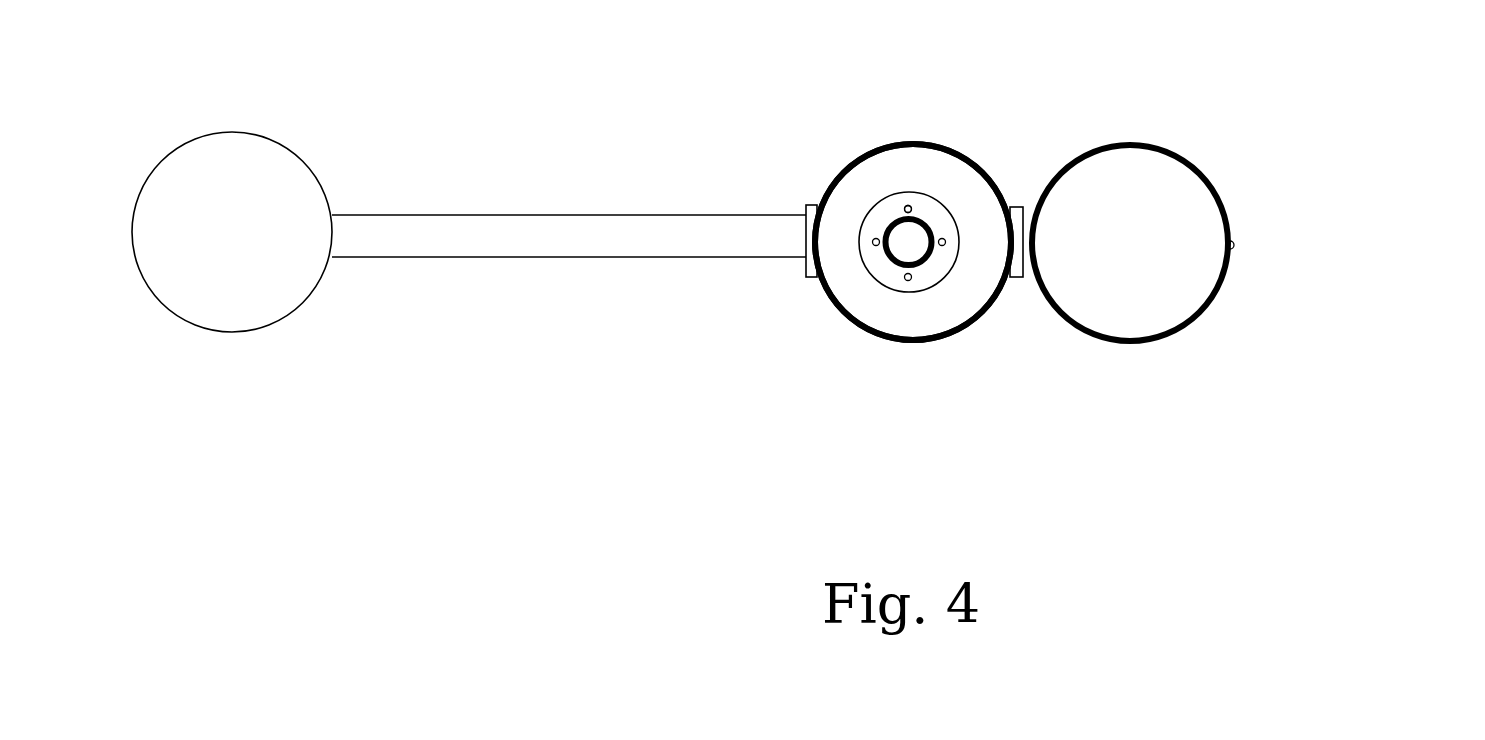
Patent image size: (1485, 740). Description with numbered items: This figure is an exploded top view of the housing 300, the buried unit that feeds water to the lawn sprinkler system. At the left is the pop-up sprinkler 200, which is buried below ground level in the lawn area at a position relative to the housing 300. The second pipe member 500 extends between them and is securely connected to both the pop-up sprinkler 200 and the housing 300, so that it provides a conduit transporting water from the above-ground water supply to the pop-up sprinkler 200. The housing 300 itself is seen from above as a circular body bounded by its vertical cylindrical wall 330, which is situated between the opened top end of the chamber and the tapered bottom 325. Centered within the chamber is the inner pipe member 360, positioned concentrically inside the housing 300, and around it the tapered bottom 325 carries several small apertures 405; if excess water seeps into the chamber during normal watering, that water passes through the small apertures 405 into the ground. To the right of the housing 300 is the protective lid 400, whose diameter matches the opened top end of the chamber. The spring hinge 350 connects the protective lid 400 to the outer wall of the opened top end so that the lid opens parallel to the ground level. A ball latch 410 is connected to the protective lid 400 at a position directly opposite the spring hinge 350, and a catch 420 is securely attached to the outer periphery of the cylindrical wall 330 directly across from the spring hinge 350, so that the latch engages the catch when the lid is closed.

The pop-up sprinkler 200 is at (228, 372).
The second pipe member 500 is at (448, 298).
The housing 300 is at (911, 382).
The vertical cylindrical wall 330 is at (833, 295).
The inner pipe member 360 is at (890, 262).
The tapered bottom 325 is at (887, 213).
The small apertures 405 is at (911, 206).
The catch 420 is at (807, 242).
The spring hinge 350 is at (1023, 230).
The protective lid 400 is at (1122, 287).
The ball latch 410 is at (1233, 244).